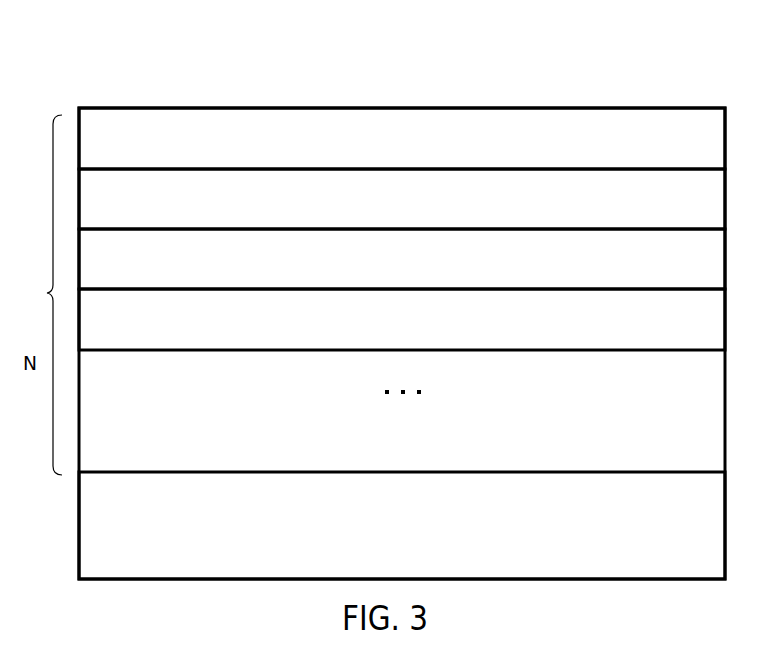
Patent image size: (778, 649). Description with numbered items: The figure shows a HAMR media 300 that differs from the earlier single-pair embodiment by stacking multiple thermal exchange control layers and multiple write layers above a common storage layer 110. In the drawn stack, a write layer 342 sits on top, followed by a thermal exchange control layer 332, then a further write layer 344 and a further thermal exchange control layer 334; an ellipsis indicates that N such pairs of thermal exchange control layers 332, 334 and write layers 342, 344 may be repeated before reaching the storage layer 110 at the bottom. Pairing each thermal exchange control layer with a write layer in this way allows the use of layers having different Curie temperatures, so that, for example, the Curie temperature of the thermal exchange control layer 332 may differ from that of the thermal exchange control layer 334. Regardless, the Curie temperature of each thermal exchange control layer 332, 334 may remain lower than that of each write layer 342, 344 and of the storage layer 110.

The HAMR media 300 is at (96, 70).
The write layer 342 is at (385, 161).
The thermal exchange control layer 332 is at (385, 221).
The write layer 344 is at (385, 282).
The thermal exchange control layer 334 is at (385, 342).
The storage layer 110 is at (385, 548).